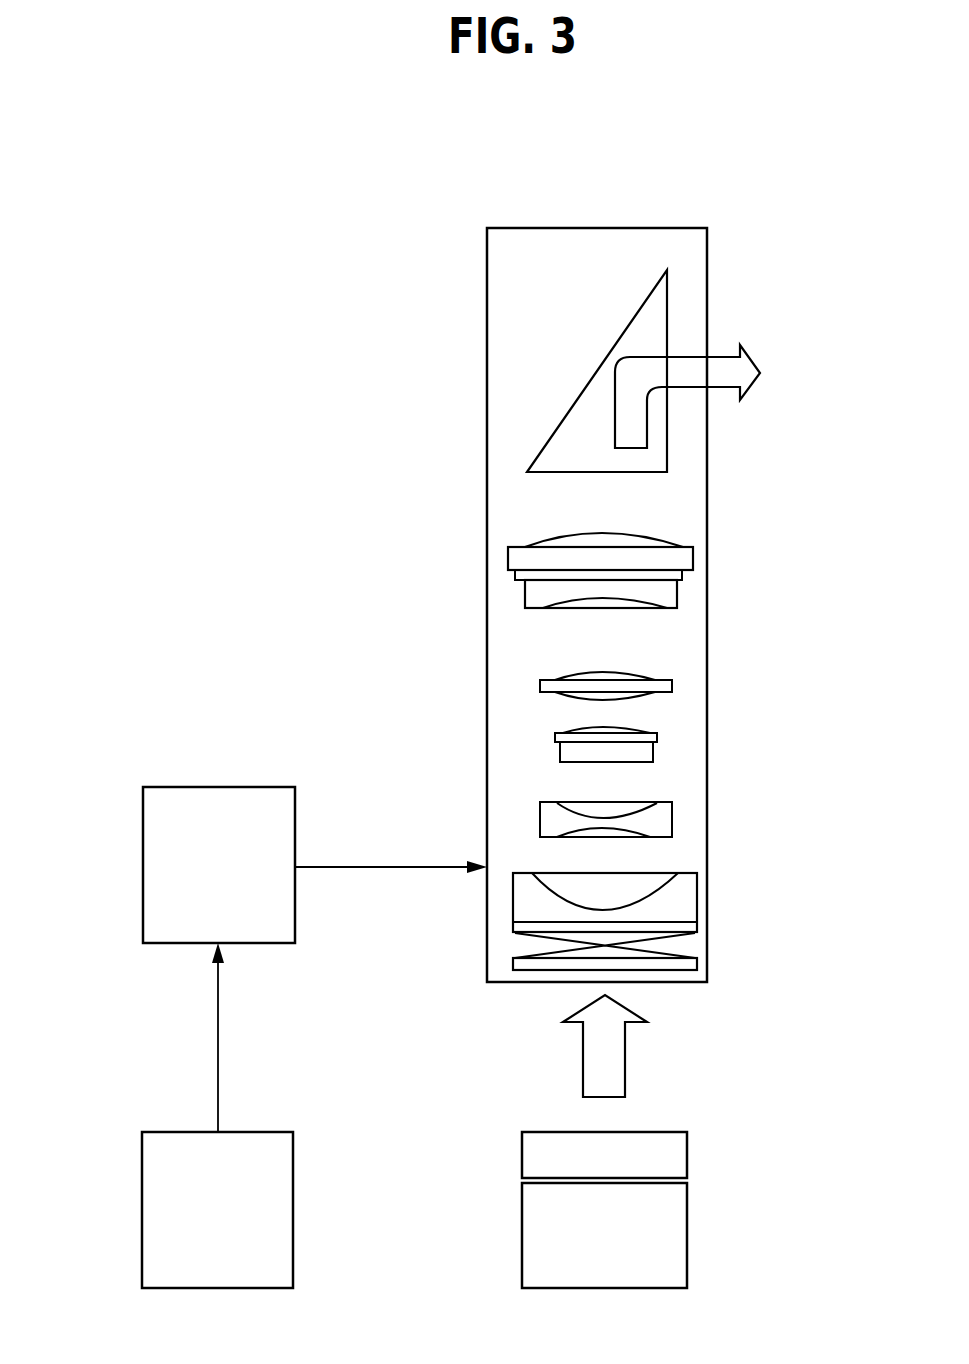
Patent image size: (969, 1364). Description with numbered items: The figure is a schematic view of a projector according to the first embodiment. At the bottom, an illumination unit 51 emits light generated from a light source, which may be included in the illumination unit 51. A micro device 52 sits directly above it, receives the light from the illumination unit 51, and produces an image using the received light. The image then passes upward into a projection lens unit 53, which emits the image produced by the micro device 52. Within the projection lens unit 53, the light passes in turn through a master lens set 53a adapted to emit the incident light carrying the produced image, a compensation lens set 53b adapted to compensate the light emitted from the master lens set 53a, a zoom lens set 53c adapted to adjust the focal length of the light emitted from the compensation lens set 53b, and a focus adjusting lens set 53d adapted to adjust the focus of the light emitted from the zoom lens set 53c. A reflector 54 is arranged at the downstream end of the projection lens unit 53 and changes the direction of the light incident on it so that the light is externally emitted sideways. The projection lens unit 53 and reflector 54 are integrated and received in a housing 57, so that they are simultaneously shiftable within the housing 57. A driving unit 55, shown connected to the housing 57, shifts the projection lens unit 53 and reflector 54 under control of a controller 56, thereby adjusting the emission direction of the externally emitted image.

The illumination unit 51 is at (687, 1233).
The micro device 52 is at (687, 1148).
The projection lens unit 53 is at (692, 753).
The master lens set 53a is at (659, 919).
The compensation lens set 53b is at (722, 793).
The zoom lens set 53c is at (722, 680).
The focus adjusting lens set 53d is at (722, 533).
The reflector 54 is at (577, 407).
The driving unit 55 is at (143, 867).
The controller 56 is at (142, 1205).
The housing 57 is at (707, 296).